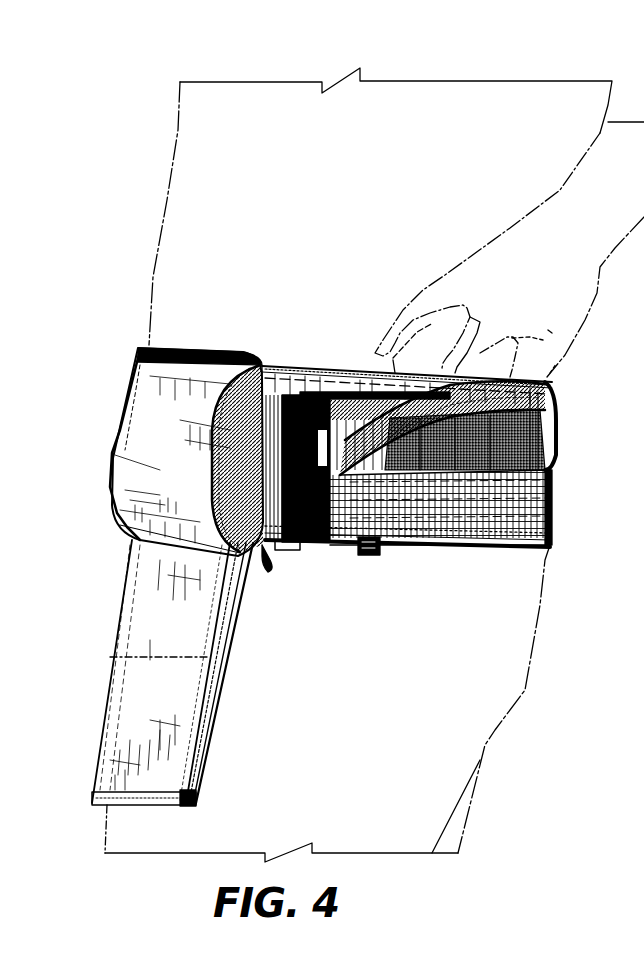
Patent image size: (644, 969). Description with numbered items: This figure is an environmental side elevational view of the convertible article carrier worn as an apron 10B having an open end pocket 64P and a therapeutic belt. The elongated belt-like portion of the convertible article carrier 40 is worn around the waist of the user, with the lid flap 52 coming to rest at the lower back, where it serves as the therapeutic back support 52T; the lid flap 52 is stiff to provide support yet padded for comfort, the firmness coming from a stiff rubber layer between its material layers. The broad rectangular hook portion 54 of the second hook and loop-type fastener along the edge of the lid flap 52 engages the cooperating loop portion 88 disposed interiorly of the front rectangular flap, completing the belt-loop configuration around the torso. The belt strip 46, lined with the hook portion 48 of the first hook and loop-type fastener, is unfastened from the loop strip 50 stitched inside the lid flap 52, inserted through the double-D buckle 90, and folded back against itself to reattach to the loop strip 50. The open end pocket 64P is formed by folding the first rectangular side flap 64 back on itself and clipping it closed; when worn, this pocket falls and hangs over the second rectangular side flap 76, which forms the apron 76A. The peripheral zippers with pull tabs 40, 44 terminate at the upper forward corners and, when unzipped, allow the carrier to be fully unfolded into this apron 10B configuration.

The apron 10B is at (112, 366).
The pull tab 40 is at (283, 363).
The pull tab 44 is at (272, 568).
The belt strip 46 is at (553, 412).
The hook portion 48 is at (553, 455).
The loop strip 50 is at (551, 478).
The lid flap 52 is at (510, 562).
The therapeutic back support 52T is at (560, 530).
The hook portion 54 is at (342, 550).
The first rectangular side flap 64 is at (182, 482).
The open end pocket 64P is at (104, 460).
The second rectangular side flap 76 is at (175, 705).
The apron 76A is at (94, 772).
The loop portion 88 is at (285, 542).
The double-D buckle 90 is at (318, 367).